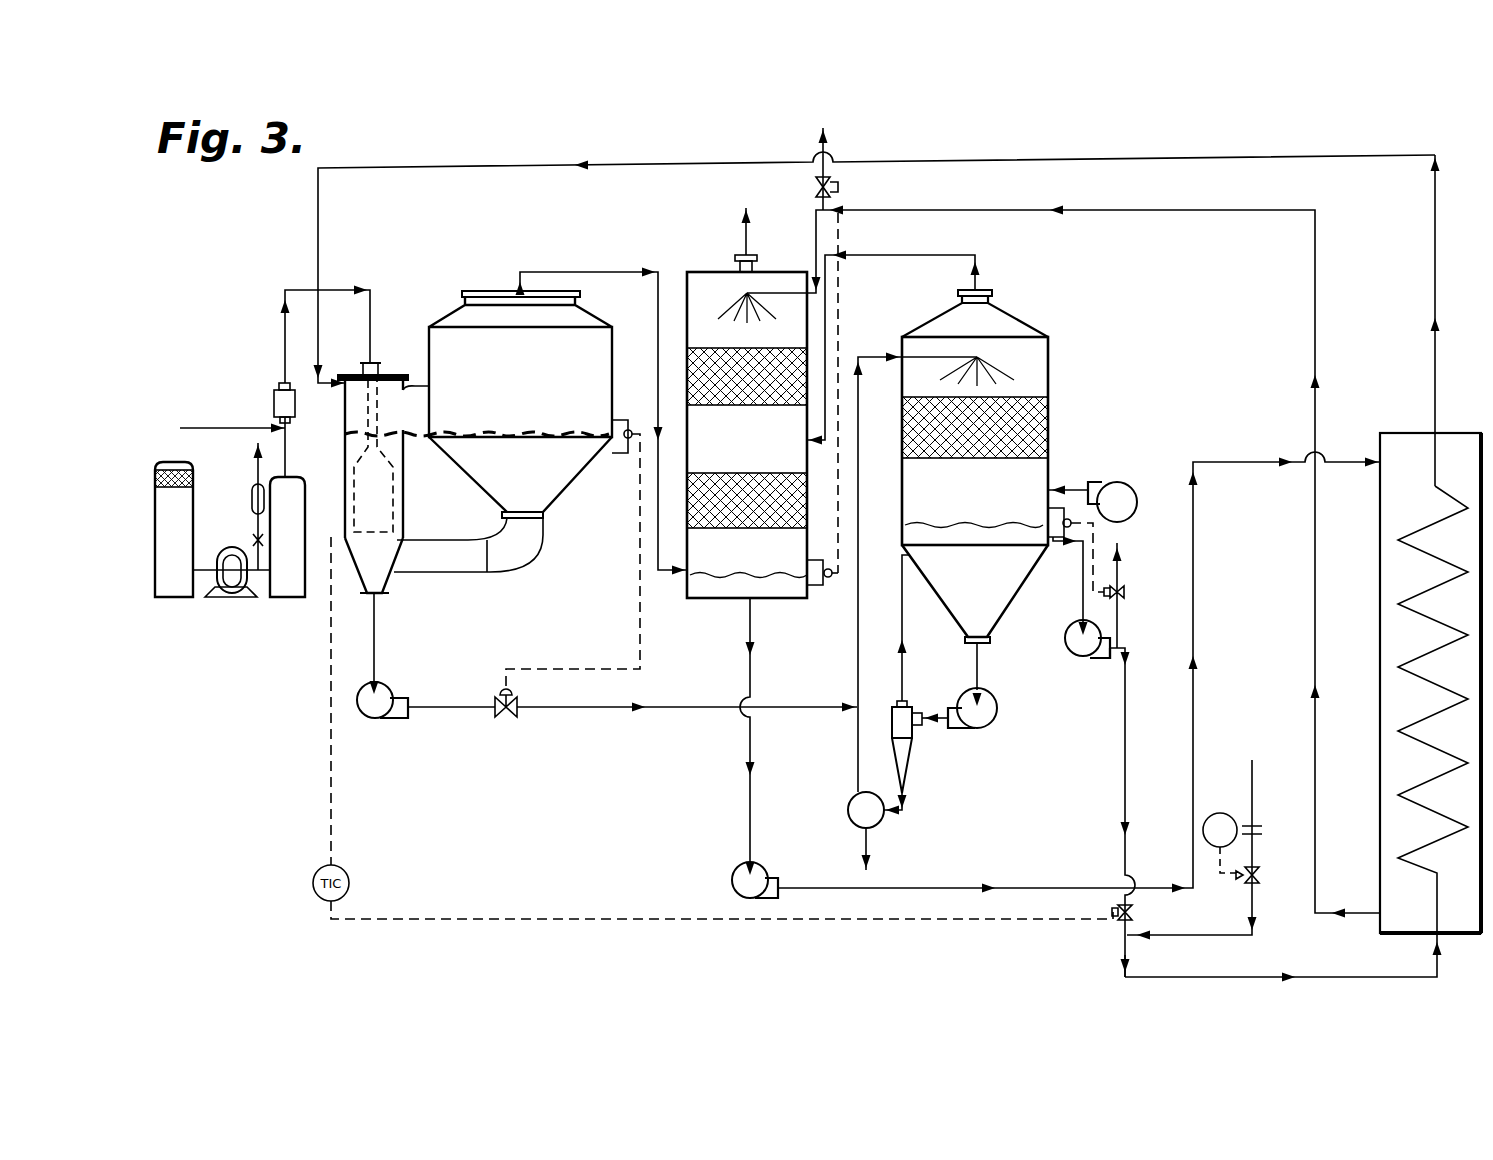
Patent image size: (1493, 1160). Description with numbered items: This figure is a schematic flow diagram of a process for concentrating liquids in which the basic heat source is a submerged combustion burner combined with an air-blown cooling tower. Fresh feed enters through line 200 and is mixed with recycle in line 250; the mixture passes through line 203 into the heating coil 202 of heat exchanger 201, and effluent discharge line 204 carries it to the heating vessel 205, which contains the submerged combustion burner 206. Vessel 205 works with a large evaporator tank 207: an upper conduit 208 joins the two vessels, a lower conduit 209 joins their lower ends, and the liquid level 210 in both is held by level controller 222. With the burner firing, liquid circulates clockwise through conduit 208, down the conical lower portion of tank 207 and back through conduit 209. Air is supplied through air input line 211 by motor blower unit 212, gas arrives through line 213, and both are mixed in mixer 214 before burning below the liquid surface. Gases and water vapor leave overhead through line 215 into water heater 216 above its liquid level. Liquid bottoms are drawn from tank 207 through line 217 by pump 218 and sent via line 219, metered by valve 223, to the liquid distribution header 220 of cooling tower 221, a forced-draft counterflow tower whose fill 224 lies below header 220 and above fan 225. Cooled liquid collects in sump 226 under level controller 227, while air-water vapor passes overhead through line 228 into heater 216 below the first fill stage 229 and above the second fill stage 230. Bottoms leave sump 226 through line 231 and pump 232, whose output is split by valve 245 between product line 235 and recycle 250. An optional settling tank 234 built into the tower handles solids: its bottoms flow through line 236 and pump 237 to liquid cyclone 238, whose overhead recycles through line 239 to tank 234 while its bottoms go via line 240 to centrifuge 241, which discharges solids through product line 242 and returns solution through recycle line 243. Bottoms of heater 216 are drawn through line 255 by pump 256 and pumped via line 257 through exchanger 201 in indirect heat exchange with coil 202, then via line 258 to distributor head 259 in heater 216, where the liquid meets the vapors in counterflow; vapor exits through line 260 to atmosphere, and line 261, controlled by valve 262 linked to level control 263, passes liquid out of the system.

The fresh feed line 200 is at (1172, 935).
The heat exchanger 201 is at (1424, 668).
The heating coil 202 is at (1430, 620).
The feed line 203 is at (1238, 978).
The effluent discharge line 204 is at (1433, 272).
The heating vessel 205 is at (404, 490).
The submerged combustion burner 206 is at (396, 464).
The evaporator tank 207 is at (478, 404).
The upper conduit 208 is at (425, 380).
The lower conduit 209 is at (470, 538).
The liquid level 210 is at (545, 432).
The air input line 211 is at (287, 450).
The motor blower unit 212 is at (174, 600).
The gas line 213 is at (185, 425).
The mixer 214 is at (273, 393).
The overhead line 215 is at (570, 270).
The water heater 216 is at (742, 419).
The bottoms line 217 is at (380, 650).
The pump 218 is at (386, 720).
The liquid line 219 is at (462, 712).
The liquid distribution header 220 is at (978, 356).
The cooling tower 221 is at (1003, 466).
The level controller 222 is at (648, 402).
The valve 223 is at (515, 715).
The fill 224 is at (968, 460).
The centrifugal blower or propeller fan 225 is at (1113, 484).
The sump 226 is at (973, 522).
The level controller 227 is at (1070, 544).
The overhead line 228 is at (922, 256).
The first stage of fill 229 is at (780, 405).
The second fill stage 230 is at (760, 472).
The bottoms line 231 is at (1080, 608).
The pump 232 is at (1088, 660).
The settling tank 234 is at (996, 614).
The product line 235 is at (1127, 626).
The settling tank bottoms line 236 is at (978, 674).
The pump 237 is at (982, 728).
The liquid cyclone 238 is at (905, 700).
The recycle line 239 is at (905, 638).
The separator bottoms line 240 is at (905, 795).
The centrifuge 241 is at (848, 808).
The product line 242 is at (862, 850).
The recycle line 243 is at (893, 508).
The valve 245 is at (1110, 912).
The recycle line 250 is at (1124, 956).
The heater bottoms line 255 is at (748, 680).
The pump 256 is at (731, 886).
The line 257 is at (1040, 884).
The line 258 is at (1314, 325).
The distributor head 259 is at (742, 300).
The vapor overhead line 260 is at (747, 232).
The liquid discharge line 261 is at (833, 180).
The valve 262 is at (838, 213).
The level control 263 is at (830, 577).